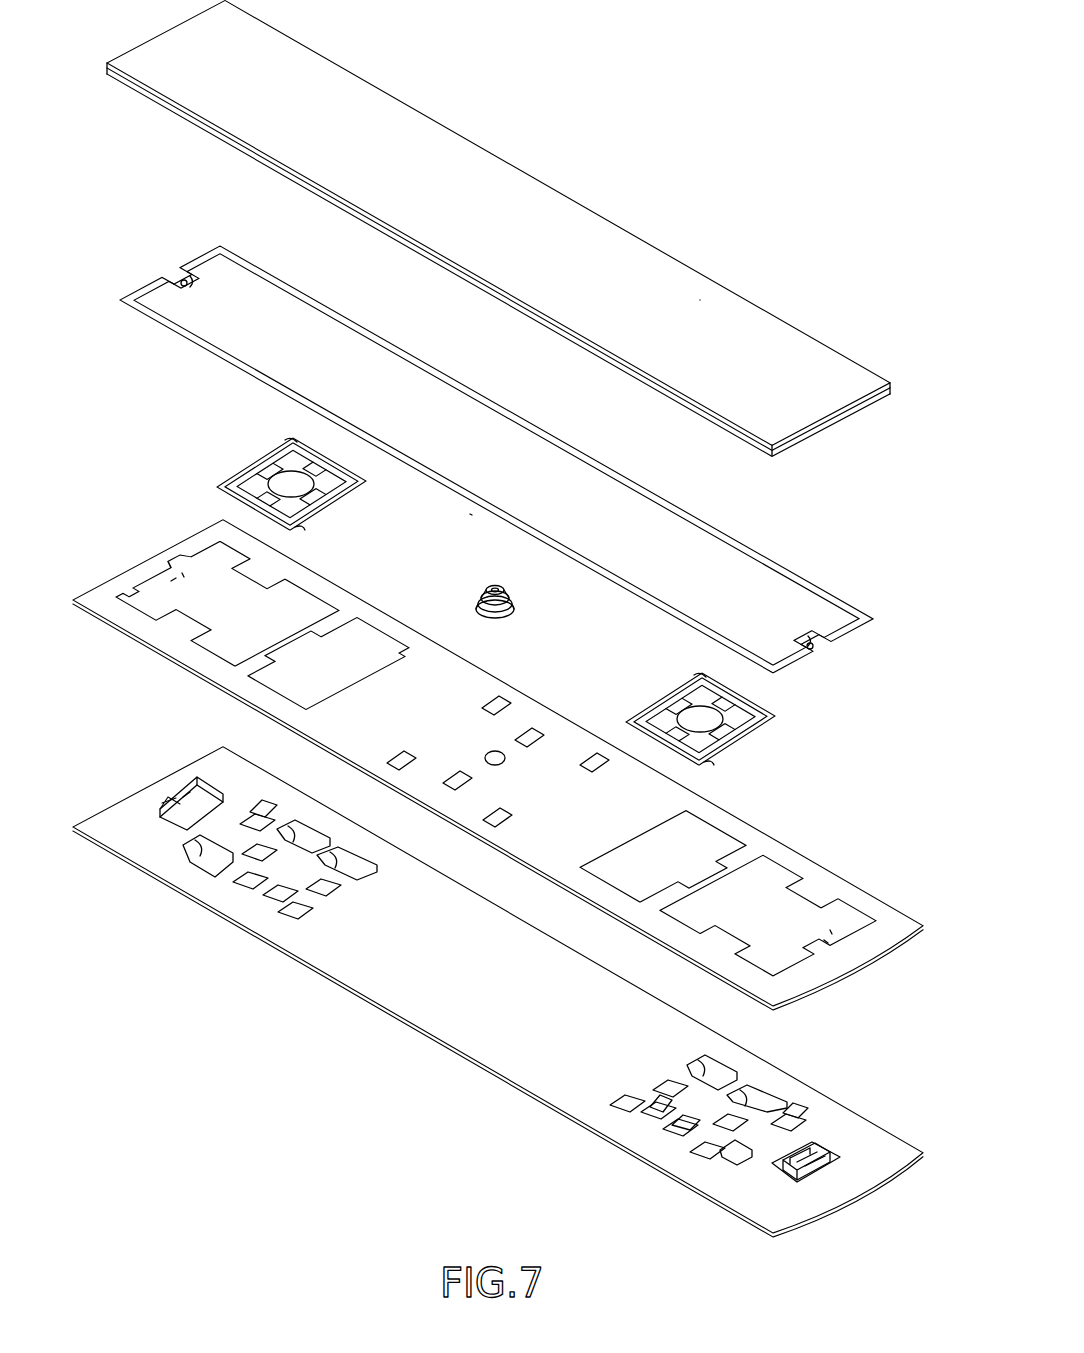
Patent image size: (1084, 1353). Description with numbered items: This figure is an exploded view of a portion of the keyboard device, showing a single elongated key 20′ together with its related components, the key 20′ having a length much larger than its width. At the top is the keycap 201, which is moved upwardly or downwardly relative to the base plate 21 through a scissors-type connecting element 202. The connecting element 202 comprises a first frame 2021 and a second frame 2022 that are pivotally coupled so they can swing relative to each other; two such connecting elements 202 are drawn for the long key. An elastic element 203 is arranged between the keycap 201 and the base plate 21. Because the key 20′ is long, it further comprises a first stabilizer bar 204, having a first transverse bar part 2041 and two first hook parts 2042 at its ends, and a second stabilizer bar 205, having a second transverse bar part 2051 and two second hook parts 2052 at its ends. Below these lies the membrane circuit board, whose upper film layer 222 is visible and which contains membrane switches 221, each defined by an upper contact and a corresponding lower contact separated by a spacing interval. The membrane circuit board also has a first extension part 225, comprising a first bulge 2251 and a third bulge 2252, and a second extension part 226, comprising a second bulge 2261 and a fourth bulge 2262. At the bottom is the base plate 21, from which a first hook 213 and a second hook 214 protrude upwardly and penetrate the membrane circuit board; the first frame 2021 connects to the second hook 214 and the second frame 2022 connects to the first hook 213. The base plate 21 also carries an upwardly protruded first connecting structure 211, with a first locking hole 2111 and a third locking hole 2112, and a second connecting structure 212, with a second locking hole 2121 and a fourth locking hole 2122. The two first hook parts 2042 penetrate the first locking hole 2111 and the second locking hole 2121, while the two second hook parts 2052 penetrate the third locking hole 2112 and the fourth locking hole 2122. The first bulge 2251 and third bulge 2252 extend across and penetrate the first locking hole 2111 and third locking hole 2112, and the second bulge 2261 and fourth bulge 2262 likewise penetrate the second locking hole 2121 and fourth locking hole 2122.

The key 20′ is at (768, 288).
The keycap 201 is at (584, 228).
The connecting element 202 is at (491, 588).
The first frame 2021 is at (340, 505).
The second frame 2022 is at (286, 490).
The elastic element 203 is at (520, 601).
The first stabilizer bar 204 is at (475, 469).
The first transverse bar part 2041 is at (475, 512).
The first hook parts 2042 is at (182, 279).
The second stabilizer bar 205 is at (475, 469).
The second transverse bar part 2051 is at (545, 428).
The second hook parts 2052 is at (203, 290).
The base plate 21 is at (502, 976).
The first connecting structure 211 is at (809, 1165).
The first locking hole 2111 is at (820, 1172).
The third locking hole 2112 is at (840, 1150).
The second connecting structure 212 is at (151, 796).
The second locking hole 2121 is at (164, 800).
The fourth locking hole 2122 is at (184, 796).
The first hook 213 is at (235, 862).
The second hook 214 is at (290, 825).
The membrane switch 221 is at (490, 752).
The upper film layer 222 is at (501, 755).
The first extension part 225 is at (728, 908).
The first bulge 2251 is at (824, 938).
The third bulge 2252 is at (830, 930).
The second extension part 226 is at (248, 603).
The second bulge 2261 is at (174, 580).
The fourth bulge 2262 is at (192, 576).